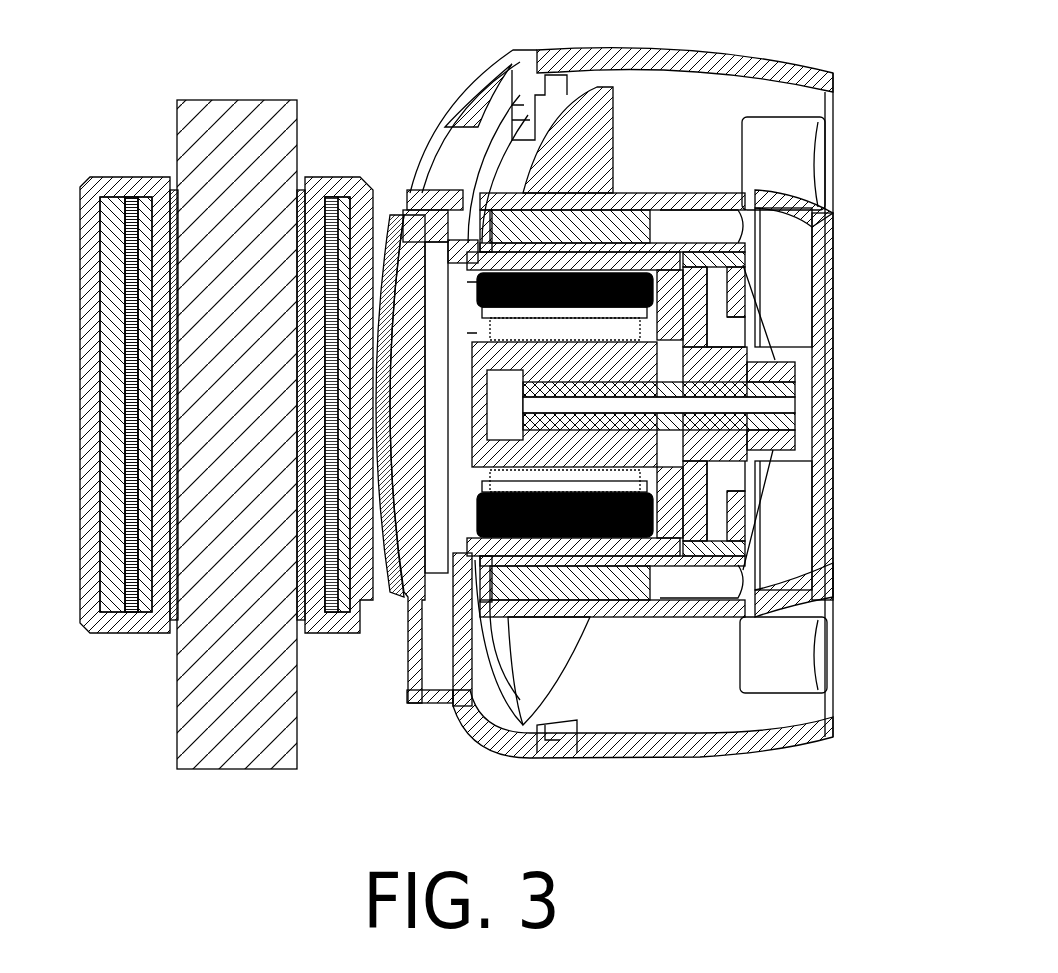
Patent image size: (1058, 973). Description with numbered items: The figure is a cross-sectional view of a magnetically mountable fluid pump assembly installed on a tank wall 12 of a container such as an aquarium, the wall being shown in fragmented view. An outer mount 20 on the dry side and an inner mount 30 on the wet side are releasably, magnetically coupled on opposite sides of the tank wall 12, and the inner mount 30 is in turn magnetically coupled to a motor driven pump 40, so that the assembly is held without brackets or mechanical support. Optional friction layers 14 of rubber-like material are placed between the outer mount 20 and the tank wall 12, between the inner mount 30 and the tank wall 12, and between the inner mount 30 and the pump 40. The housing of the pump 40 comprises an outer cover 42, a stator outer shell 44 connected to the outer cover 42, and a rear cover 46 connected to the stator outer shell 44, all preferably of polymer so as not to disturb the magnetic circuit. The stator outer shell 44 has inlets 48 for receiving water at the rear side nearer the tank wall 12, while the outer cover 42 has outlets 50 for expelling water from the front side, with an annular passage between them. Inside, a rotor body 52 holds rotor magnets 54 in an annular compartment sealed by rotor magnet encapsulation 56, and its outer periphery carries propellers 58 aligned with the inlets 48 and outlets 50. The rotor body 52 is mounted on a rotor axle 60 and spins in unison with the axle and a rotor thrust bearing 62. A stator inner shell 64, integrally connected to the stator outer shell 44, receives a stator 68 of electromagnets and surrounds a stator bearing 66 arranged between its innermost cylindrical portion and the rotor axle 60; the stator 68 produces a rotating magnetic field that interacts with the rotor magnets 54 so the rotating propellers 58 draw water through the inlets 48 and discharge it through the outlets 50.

The tank wall 12 is at (176, 703).
The friction layer 14 is at (173, 213).
The outer mount 20 is at (80, 372).
The inner mount 30 is at (324, 645).
The motor driven pump 40 is at (866, 741).
The outer cover 42 is at (752, 62).
The stator outer shell 44 is at (486, 95).
The rear cover 46 is at (393, 543).
The inlets 48 is at (412, 138).
The outlets 50 is at (848, 179).
The rotor body 52 is at (742, 290).
The rotor magnets 54 is at (613, 584).
The rotor magnet encapsulation 56 is at (708, 223).
The propellers 58 is at (600, 110).
The rotor axle 60 is at (780, 388).
The rotor thrust bearing 62 is at (745, 345).
The stator inner shell 64 is at (753, 572).
The stator bearing 66 is at (712, 432).
The stator 68 is at (700, 523).